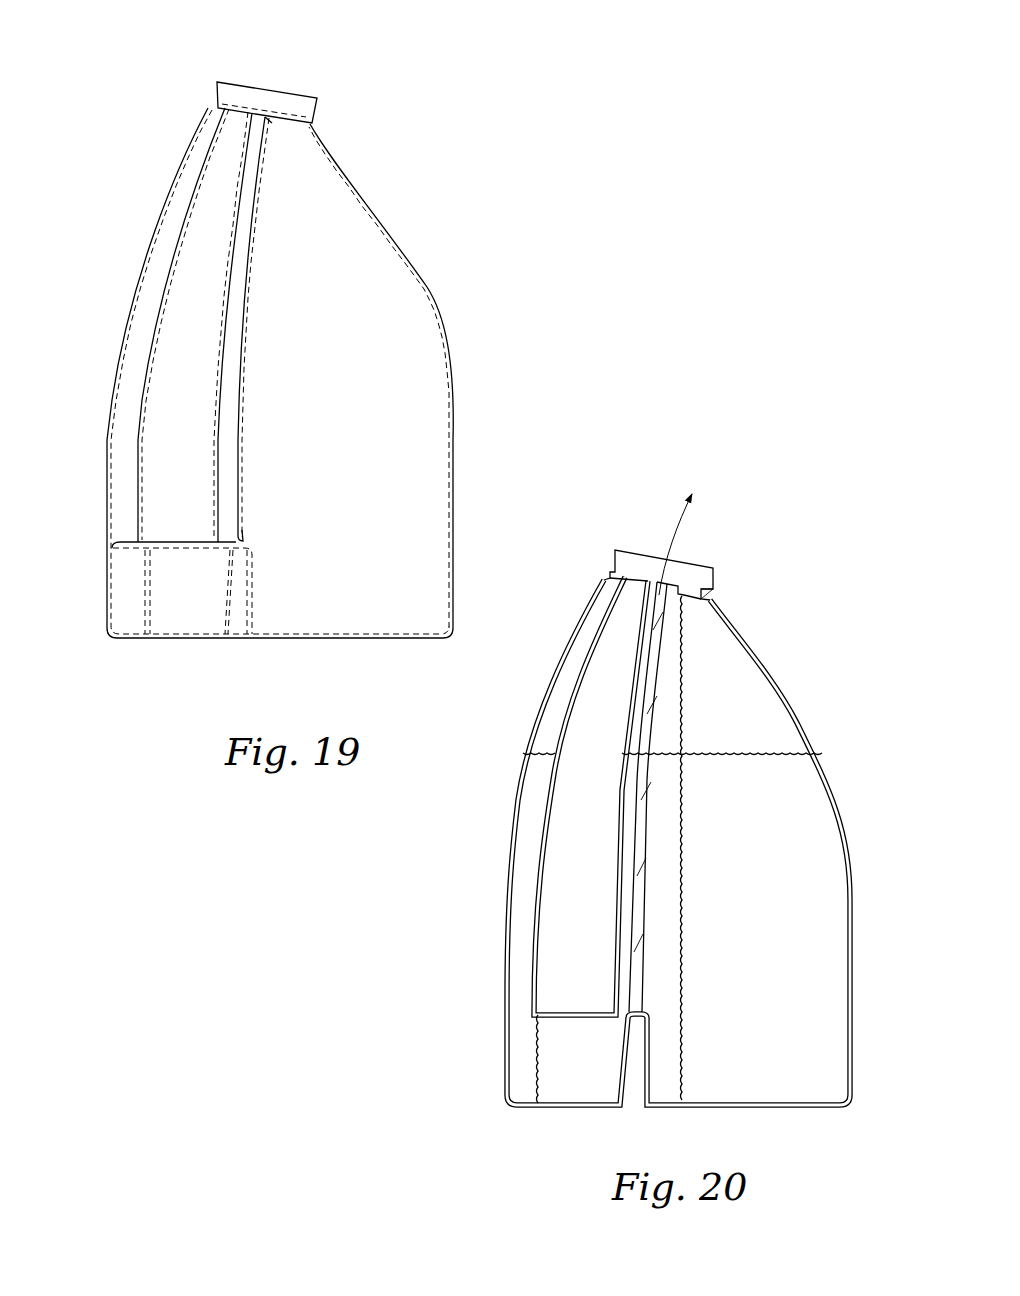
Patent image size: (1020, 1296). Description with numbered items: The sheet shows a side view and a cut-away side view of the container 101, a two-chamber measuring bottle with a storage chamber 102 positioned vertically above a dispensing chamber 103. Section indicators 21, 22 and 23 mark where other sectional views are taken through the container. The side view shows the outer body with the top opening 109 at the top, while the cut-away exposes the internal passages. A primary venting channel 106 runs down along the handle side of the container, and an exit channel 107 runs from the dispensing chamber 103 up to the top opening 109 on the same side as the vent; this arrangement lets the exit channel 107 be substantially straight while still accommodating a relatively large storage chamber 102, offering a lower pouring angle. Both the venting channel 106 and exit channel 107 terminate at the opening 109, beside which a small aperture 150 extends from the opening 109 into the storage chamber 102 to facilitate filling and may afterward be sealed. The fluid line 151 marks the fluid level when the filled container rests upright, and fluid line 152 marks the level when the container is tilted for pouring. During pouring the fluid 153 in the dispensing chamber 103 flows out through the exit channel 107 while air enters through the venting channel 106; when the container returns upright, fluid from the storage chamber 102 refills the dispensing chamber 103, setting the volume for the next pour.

In FIG. 19, the container 101 is at (324, 373).
In FIG. 20, the container 101 is at (642, 842).
In FIG. 19, the storage chamber 102 is at (399, 366).
In FIG. 20, the storage chamber 102 is at (803, 813).
In FIG. 19, the dispensing chamber 103 is at (167, 587).
In FIG. 20, the dispensing chamber 103 is at (577, 1060).
In FIG. 20, the primary venting channel 106 is at (520, 910).
In FIG. 20, the exit channel 107 is at (643, 667).
In FIG. 19, the top opening 109 is at (320, 90).
In FIG. 20, the top opening 109 is at (632, 550).
In FIG. 20, the aperture 150 is at (693, 578).
In FIG. 20, the fluid line 151 is at (762, 752).
In FIG. 20, the fluid line 152 is at (538, 1062).
In FIG. 20, the fluid 153 is at (682, 514).
In FIG. 19, the section line 21- 21 is at (298, 85).
In FIG. 19, the section line 22- 22 is at (100, 610).
In FIG. 19, the section line 23- 23 is at (100, 513).